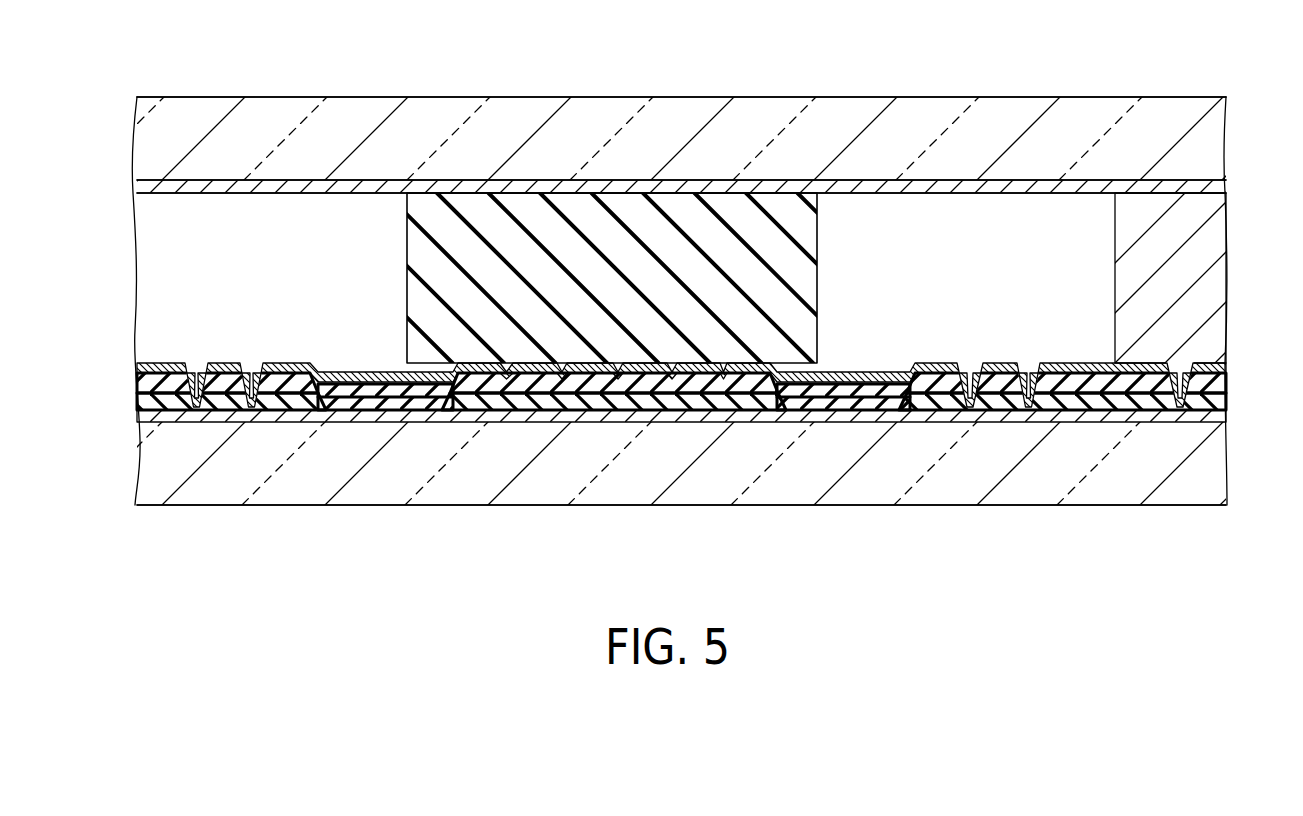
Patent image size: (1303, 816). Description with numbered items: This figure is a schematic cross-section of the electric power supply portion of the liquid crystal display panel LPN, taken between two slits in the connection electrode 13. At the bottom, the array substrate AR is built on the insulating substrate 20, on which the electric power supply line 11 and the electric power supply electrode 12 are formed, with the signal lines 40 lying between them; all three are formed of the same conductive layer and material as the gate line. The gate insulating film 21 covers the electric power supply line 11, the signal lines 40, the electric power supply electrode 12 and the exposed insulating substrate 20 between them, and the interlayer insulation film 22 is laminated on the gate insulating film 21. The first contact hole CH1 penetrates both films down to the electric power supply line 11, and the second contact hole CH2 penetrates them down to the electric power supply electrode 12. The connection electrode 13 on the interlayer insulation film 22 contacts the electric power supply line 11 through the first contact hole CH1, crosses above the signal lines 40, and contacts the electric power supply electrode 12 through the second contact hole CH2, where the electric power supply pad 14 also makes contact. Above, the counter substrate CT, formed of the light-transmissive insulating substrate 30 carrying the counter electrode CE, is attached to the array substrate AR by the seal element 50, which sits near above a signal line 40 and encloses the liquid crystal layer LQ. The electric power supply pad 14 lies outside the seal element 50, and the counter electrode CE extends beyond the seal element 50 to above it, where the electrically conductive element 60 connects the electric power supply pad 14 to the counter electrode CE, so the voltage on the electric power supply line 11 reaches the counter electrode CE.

The insulating substrate 30 is at (270, 108).
The counter electrode CE is at (370, 187).
The counter substrate CT is at (107, 97).
The liquid crystal layer LQ is at (155, 275).
The seal element 50 is at (807, 232).
The electrically conductive element 60 is at (1217, 238).
The first contact hole CH1 is at (250, 366).
The second contact hole CH2 is at (974, 362).
The connection electrode 13 is at (352, 368).
The electric power supply pad 14 is at (1223, 370).
The array substrate AR is at (107, 363).
The electric power supply line 11 is at (222, 415).
The signal lines 40 is at (593, 424).
The gate insulating film 21 is at (837, 414).
The interlayer insulation film 22 is at (903, 402).
The electric power supply electrode 12 is at (1093, 416).
The insulating substrate 20 is at (1217, 452).
The liquid crystal display panel LPN is at (124, 539).